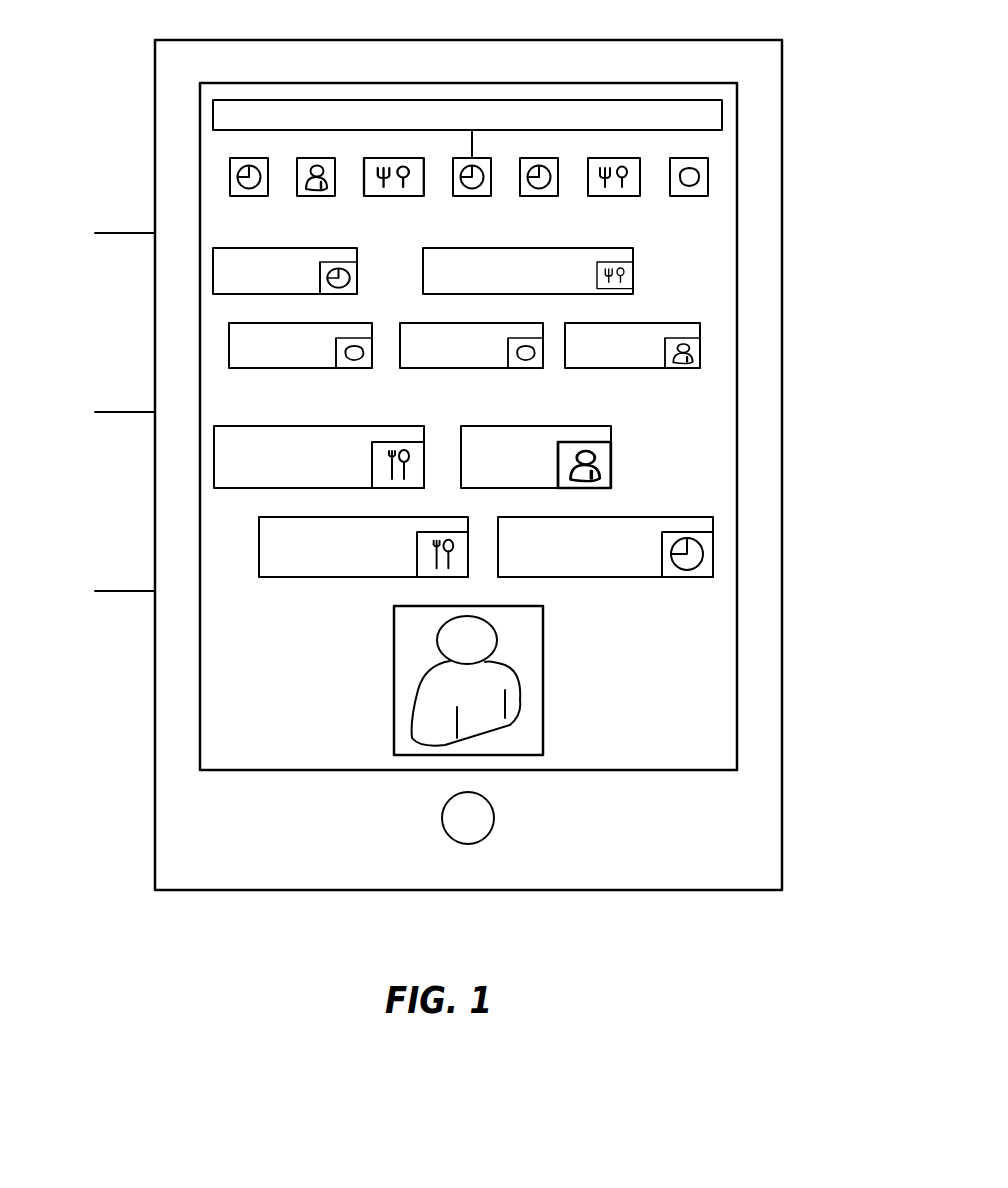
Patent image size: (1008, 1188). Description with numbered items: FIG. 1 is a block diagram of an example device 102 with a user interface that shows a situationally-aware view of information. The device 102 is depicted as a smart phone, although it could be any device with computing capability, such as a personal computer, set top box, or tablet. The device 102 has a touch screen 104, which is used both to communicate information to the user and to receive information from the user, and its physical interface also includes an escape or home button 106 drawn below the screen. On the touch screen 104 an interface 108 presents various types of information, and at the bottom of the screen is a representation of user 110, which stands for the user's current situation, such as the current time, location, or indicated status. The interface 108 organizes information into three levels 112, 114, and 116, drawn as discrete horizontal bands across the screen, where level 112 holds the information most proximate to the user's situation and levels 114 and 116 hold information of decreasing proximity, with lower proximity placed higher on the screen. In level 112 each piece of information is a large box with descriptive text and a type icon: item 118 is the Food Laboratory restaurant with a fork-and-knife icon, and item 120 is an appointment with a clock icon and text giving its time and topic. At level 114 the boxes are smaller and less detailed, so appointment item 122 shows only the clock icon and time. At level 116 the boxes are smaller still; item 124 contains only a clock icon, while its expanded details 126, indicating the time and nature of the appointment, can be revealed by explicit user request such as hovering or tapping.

The device 102 is at (737, 40).
The touch screen 104 is at (737, 167).
The home button 106 is at (495, 815).
The interface 108 is at (677, 393).
The representation of user 110 is at (543, 655).
The level 112 is at (120, 481).
The level 114 is at (120, 298).
The level 116 is at (120, 110).
The item 118 is at (335, 577).
The item 120 is at (715, 560).
The appointment item 122 is at (290, 247).
The item 124 is at (465, 196).
The expanded details 126 is at (722, 110).